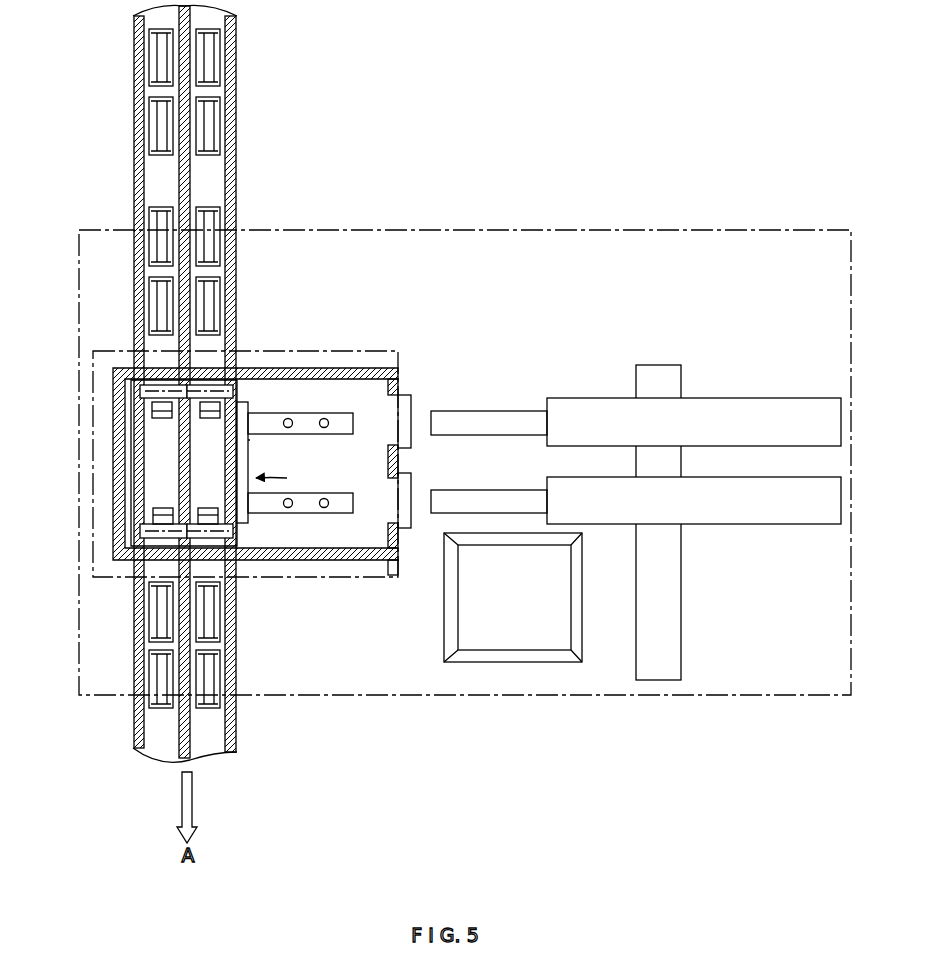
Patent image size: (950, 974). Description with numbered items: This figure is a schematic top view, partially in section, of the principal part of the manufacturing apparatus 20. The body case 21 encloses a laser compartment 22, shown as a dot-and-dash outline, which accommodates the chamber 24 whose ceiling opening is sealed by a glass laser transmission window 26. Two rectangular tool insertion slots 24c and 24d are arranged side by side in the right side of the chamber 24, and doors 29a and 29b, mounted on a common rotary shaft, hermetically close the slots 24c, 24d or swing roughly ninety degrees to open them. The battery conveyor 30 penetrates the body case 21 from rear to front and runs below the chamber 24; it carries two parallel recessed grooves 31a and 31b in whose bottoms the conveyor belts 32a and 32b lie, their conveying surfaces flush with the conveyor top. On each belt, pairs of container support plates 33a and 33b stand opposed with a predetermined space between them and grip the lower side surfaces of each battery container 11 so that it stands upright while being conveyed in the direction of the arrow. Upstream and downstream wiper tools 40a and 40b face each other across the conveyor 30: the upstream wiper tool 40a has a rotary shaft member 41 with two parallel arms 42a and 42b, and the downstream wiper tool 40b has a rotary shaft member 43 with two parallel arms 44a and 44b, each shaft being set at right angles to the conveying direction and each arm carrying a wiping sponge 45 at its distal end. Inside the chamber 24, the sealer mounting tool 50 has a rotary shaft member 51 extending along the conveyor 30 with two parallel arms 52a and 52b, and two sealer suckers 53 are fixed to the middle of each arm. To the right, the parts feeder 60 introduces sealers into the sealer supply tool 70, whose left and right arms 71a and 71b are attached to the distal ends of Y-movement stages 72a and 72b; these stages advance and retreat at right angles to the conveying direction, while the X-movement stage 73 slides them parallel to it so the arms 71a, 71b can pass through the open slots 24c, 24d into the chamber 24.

The battery container 11 is at (185, 381).
The manufacturing apparatus 20 is at (465, 423).
The body case 21 is at (733, 229).
The laser compartment 22 is at (372, 350).
The chamber 24 is at (286, 461).
The tool insertion slot 24c is at (392, 540).
The tool insertion slot 24d is at (392, 408).
The laser transmission window 26 is at (250, 403).
The door 29a is at (412, 490).
The door 29b is at (405, 393).
The battery conveyor 30 is at (197, 412).
The recessed groove 31a is at (158, 749).
The recessed groove 31b is at (222, 750).
The conveyor belt 32a is at (170, 760).
The conveyor belt 32b is at (205, 762).
The container support plate 33a is at (155, 127).
The container support plate 33b is at (160, 92).
The upstream wiper tool 40a is at (147, 423).
The downstream wiper tool 40b is at (149, 503).
The rotary shaft member 41 is at (152, 358).
The arm 42a is at (140, 394).
The arm 42b is at (233, 392).
The rotary shaft member 43 is at (165, 541).
The arm 44a is at (133, 518).
The arm 44b is at (243, 521).
The wiping sponge 45 is at (166, 419).
The sealer mounting tool 50 is at (285, 478).
The rotary shaft member 51 is at (250, 437).
The arm 52a is at (330, 496).
The arm 52b is at (307, 420).
The sealer sucker 53 is at (291, 428).
The parts feeder 60 is at (444, 645).
The sealer supply tool 70 is at (636, 494).
The arm 71a is at (512, 489).
The arm 71b is at (512, 410).
The Y-movement stage 72a is at (812, 525).
The Y-movement stage 72b is at (805, 397).
The X-movement stage 73 is at (682, 607).